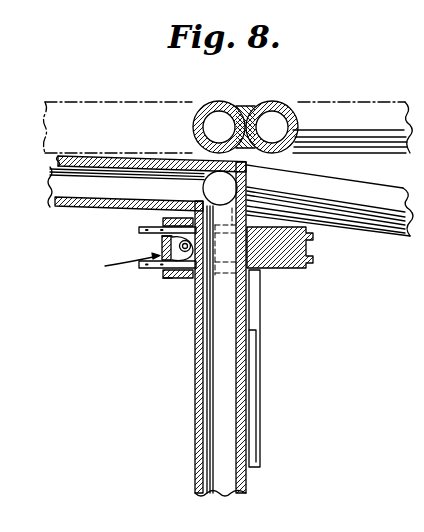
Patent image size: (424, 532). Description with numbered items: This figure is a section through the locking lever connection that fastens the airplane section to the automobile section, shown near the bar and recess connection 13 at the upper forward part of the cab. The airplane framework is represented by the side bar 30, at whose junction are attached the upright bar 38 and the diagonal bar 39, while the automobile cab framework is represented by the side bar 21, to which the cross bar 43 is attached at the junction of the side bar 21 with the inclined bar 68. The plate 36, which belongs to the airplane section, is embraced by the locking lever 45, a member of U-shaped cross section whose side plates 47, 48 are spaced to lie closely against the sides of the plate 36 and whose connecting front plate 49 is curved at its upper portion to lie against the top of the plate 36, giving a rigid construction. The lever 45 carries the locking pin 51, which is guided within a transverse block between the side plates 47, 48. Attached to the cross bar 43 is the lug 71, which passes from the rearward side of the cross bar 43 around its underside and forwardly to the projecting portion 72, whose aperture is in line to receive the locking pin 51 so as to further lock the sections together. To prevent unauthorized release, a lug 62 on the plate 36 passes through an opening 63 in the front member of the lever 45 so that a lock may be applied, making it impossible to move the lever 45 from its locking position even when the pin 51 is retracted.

The side bar 30 is at (120, 107).
The upright bar 38 is at (222, 103).
The diagonal bar 39 is at (278, 103).
The side bar 21 is at (118, 157).
The bar and recess connection 13 is at (185, 224).
The locking pin 51 is at (203, 188).
The side plate 47 is at (164, 222).
The lug 62 is at (141, 229).
The opening 63 is at (162, 236).
The front plate 49 is at (162, 247).
The locking lever 45 is at (123, 262).
The side plate 48 is at (178, 279).
The projecting portion 72 is at (188, 252).
The cross bar 43 is at (197, 353).
The lug 71 is at (265, 275).
The plate 36 is at (285, 269).
The inclined bar 68 is at (385, 238).